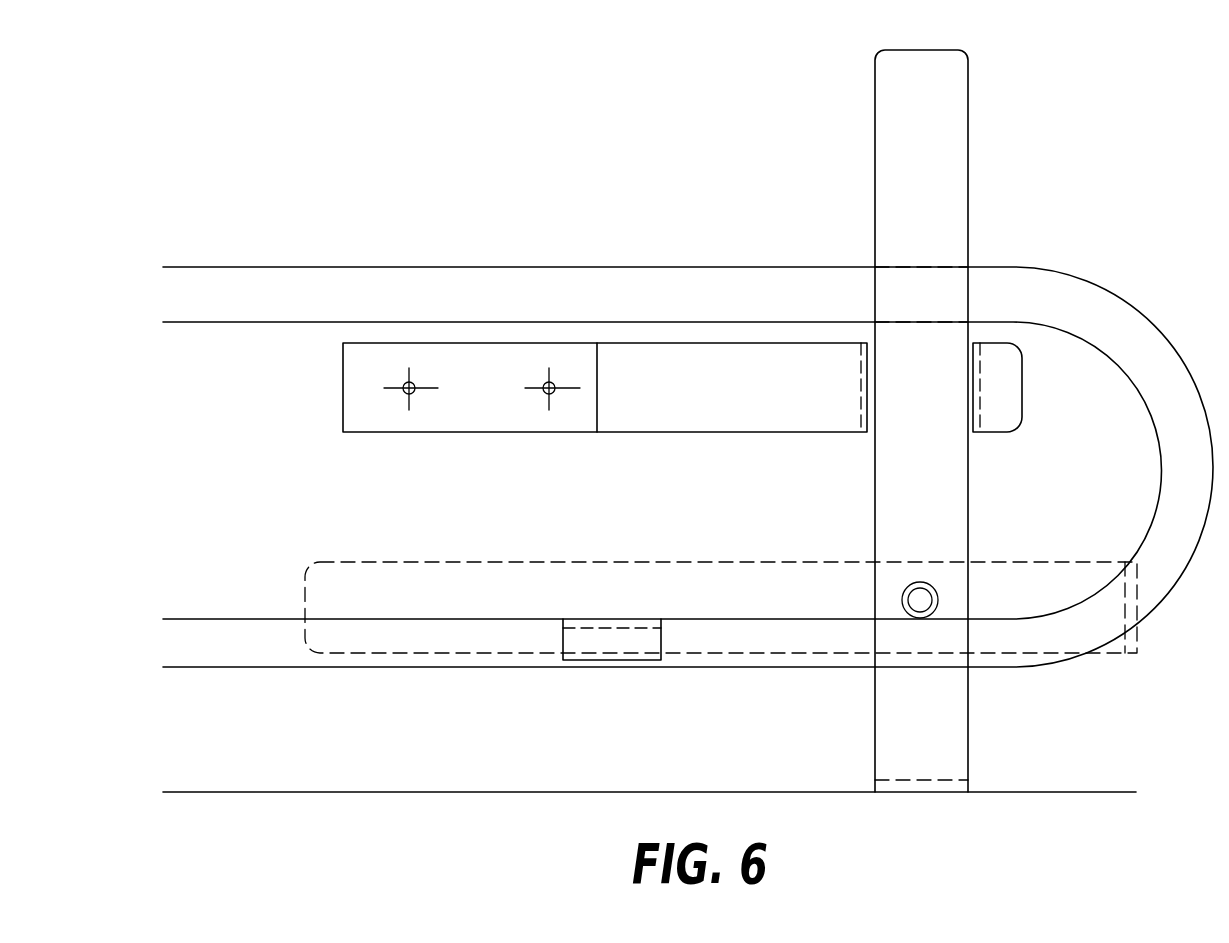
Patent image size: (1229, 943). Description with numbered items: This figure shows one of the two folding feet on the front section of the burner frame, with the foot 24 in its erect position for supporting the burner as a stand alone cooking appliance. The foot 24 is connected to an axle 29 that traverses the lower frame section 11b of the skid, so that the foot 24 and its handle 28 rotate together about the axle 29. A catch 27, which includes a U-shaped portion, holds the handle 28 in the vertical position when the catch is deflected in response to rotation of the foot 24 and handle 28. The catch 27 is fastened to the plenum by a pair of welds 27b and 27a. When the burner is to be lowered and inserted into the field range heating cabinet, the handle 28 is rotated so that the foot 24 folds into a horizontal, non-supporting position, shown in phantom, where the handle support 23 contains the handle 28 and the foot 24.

The lower frame section 11b is at (1055, 659).
The handle support 23 is at (617, 652).
The folding foot 24 is at (649, 778).
The catch 27 is at (993, 433).
The weld 27a is at (554, 404).
The weld 27b is at (414, 404).
The handle 28 is at (950, 217).
The axle 29 is at (922, 602).